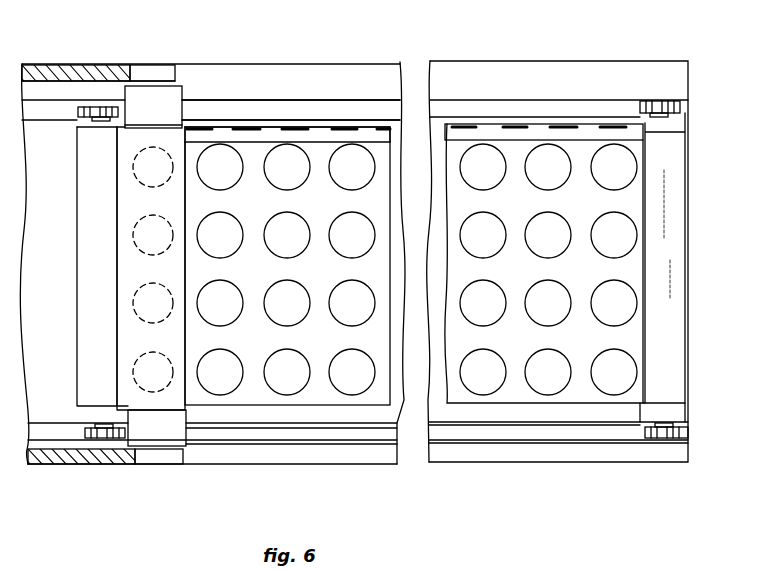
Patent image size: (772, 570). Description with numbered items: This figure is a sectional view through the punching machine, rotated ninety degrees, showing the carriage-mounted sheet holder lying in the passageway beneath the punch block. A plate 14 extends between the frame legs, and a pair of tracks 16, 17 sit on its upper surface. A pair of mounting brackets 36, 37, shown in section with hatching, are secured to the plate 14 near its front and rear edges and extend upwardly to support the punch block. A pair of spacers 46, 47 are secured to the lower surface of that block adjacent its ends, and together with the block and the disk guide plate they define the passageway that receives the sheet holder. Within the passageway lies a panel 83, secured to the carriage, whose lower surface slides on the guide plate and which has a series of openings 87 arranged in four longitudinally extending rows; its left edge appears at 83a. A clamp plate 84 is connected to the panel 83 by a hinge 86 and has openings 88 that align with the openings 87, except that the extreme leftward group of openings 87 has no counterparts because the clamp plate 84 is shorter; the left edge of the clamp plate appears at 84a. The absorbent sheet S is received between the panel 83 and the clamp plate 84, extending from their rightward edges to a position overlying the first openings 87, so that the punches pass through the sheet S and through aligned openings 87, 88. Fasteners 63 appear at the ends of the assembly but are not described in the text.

The plate 14 is at (492, 455).
The track 16 is at (262, 432).
The track 17 is at (282, 106).
The mounting bracket 36 is at (78, 456).
The mounting bracket 37 is at (78, 72).
The spacer 46 is at (168, 435).
The spacer 47 is at (167, 101).
The fastener bolt 63 is at (80, 111).
The panel 83 is at (92, 291).
The left edge of panel 83a is at (77, 203).
The clamp plate 84 is at (411, 266).
The left edge of clamp plate 84a is at (190, 204).
The hinge 86 is at (505, 125).
The openings 87 is at (160, 368).
The openings 88 is at (348, 292).
The absorbent sheet S is at (125, 263).